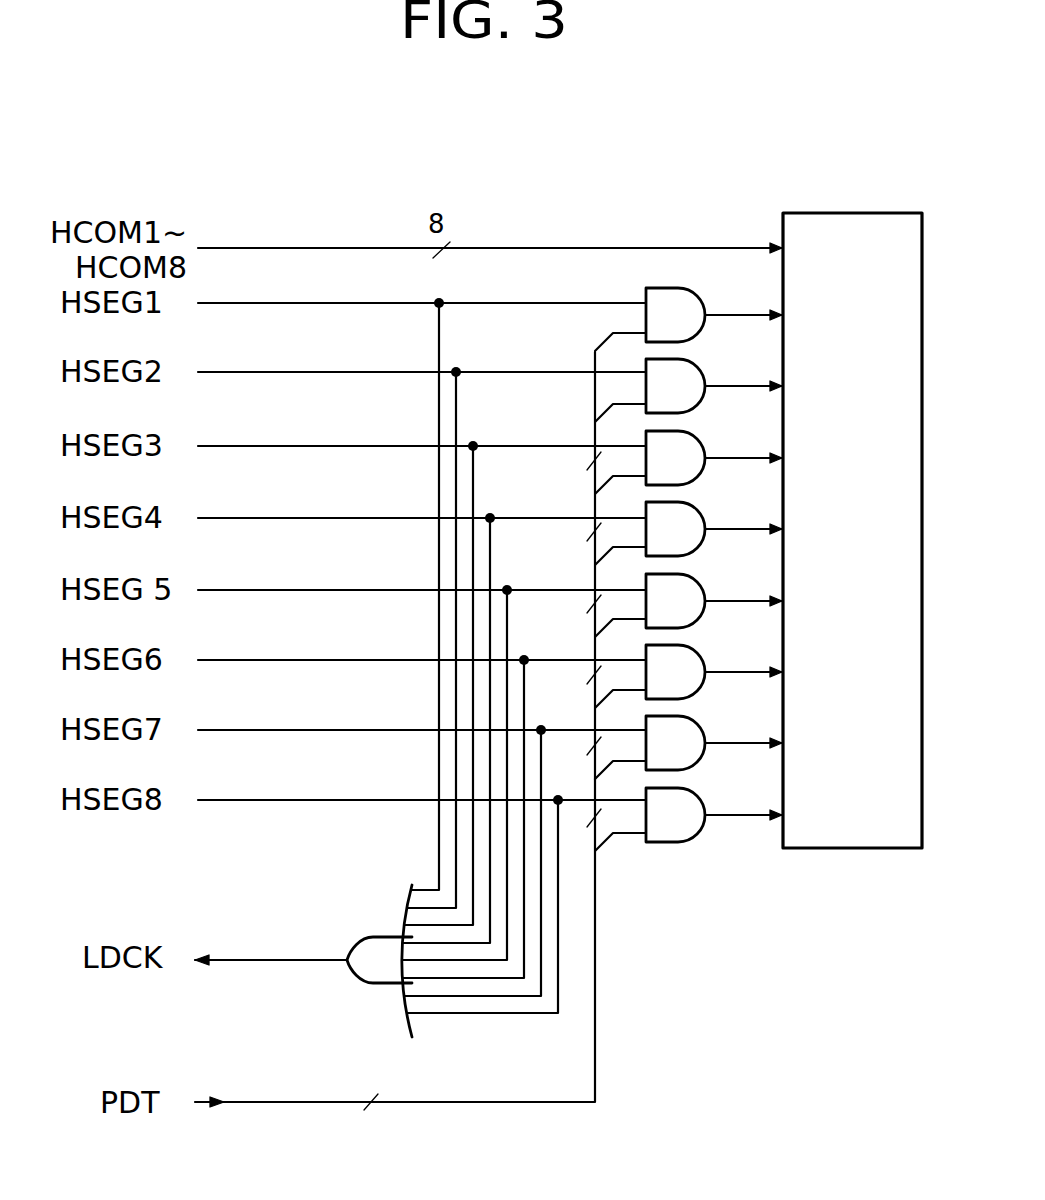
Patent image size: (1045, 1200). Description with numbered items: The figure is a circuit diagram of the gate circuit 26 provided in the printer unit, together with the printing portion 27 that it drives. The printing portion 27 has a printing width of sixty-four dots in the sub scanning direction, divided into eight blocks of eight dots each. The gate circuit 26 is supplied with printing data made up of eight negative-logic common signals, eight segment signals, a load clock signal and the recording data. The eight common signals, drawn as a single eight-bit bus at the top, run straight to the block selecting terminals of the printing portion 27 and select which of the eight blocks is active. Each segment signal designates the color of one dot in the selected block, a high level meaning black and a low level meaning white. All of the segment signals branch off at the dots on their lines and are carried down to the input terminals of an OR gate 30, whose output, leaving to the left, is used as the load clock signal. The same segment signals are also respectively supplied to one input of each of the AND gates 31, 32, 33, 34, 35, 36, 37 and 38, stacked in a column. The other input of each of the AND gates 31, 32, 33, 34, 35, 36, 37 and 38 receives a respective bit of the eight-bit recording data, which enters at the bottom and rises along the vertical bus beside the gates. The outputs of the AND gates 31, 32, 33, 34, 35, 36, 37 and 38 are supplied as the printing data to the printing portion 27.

The gate circuit 26 is at (664, 222).
The printing portion 27 is at (887, 213).
The OR gate 30 is at (378, 936).
The AND gate 31 is at (690, 291).
The AND gate 32 is at (690, 362).
The AND gate 33 is at (690, 434).
The AND gate 34 is at (690, 505).
The AND gate 35 is at (690, 577).
The AND gate 36 is at (690, 648).
The AND gate 37 is at (690, 719).
The AND gate 38 is at (690, 791).